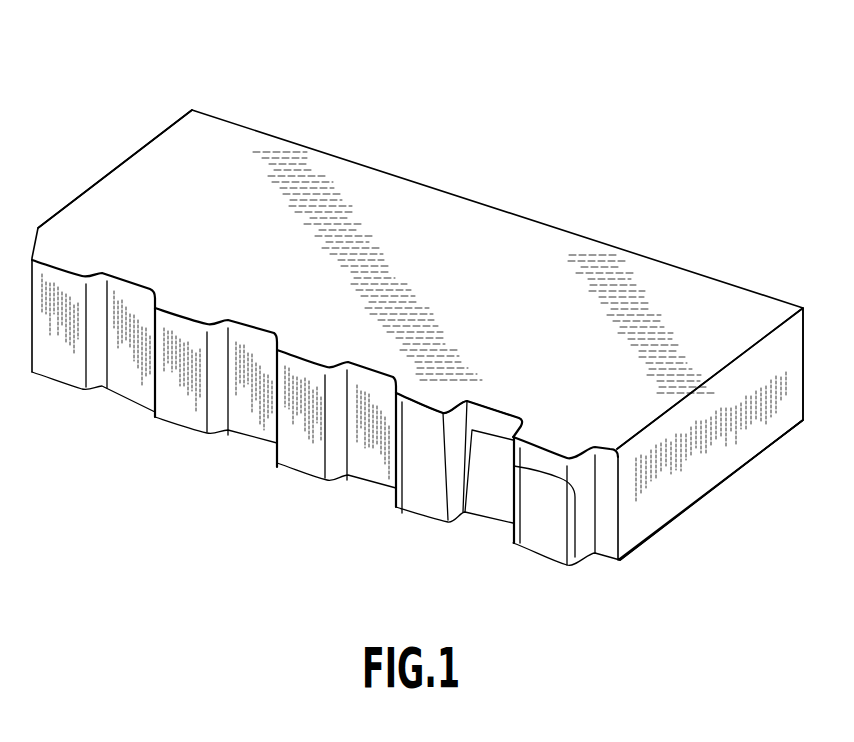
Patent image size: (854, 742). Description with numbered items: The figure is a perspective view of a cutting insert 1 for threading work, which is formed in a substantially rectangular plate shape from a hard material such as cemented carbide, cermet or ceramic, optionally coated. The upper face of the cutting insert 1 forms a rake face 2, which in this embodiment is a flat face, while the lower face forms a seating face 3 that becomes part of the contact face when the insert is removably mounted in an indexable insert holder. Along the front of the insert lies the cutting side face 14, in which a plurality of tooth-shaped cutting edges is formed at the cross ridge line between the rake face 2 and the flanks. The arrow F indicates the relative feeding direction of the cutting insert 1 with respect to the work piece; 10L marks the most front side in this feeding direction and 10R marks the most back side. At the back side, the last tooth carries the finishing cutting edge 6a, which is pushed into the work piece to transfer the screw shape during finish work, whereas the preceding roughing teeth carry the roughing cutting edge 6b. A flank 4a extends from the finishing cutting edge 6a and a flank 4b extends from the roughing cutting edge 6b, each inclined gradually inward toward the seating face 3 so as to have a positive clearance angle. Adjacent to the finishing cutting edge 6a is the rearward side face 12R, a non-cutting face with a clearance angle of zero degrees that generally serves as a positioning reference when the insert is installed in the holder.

The cutting insert 1 is at (156, 108).
The rake face 2 is at (490, 387).
The seating face 3 is at (682, 513).
The flank 4a is at (535, 532).
The flank 4b is at (62, 363).
The finishing cutting edge 6a is at (558, 438).
The roughing cutting edge 6b is at (84, 257).
The most front side in the relative feeding direction 10L is at (120, 163).
The most back side in the relative feeding direction 10R is at (745, 352).
The rearward side face 12R is at (700, 465).
The cutting side face 14 is at (110, 431).
The relative feeding direction F is at (445, 164).